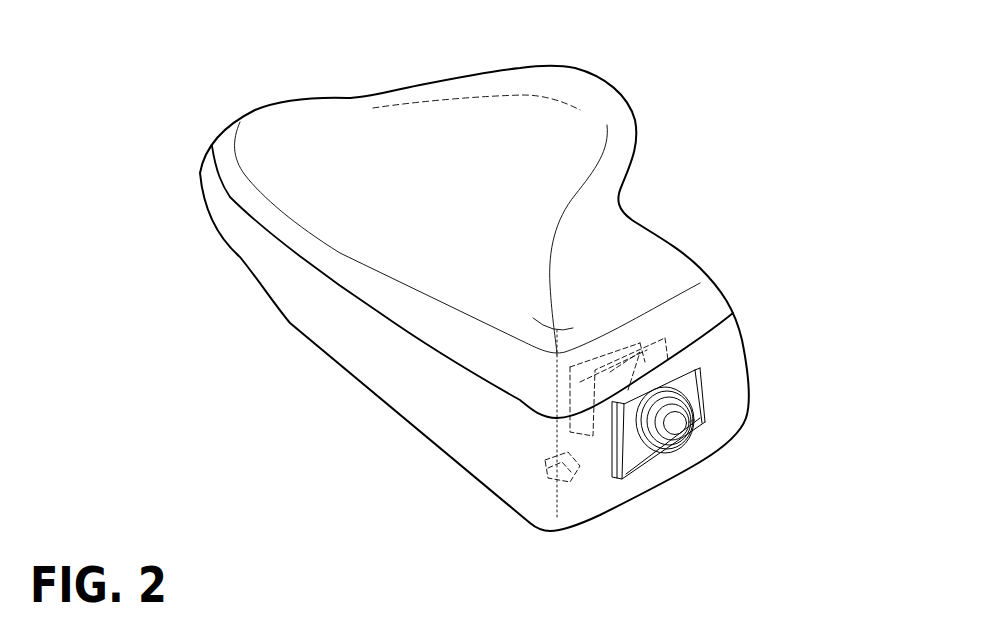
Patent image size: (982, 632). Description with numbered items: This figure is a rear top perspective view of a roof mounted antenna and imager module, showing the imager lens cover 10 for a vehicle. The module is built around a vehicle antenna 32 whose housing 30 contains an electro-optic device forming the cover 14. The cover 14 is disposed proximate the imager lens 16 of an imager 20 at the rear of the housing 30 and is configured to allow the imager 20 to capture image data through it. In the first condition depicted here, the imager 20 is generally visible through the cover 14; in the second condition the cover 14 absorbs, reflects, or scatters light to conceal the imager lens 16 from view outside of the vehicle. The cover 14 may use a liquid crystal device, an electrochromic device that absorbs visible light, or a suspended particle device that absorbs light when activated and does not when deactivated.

The imager lens cover 10 is at (830, 334).
The cover 14 is at (697, 395).
The imager lens 16 is at (677, 423).
The imager 20 is at (638, 360).
The housing 30 is at (288, 130).
The vehicle antenna 32 is at (472, 87).